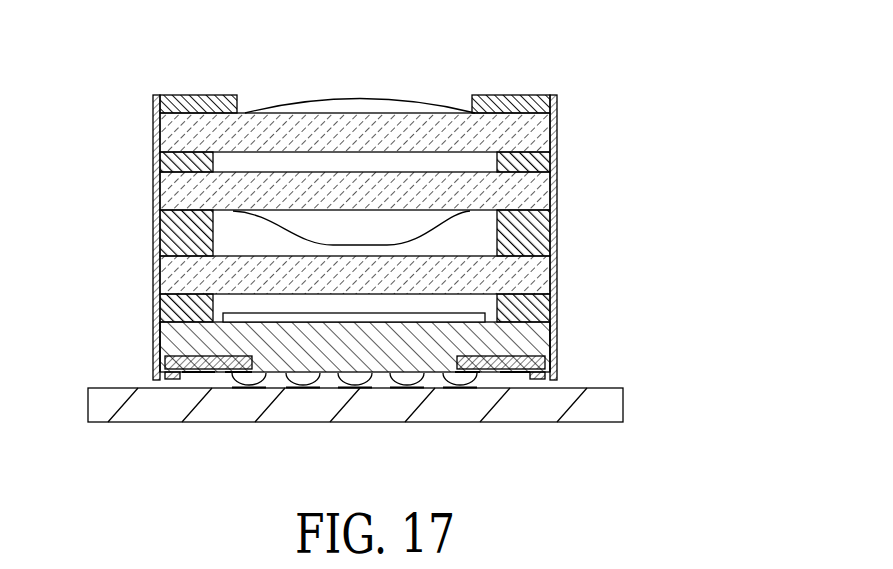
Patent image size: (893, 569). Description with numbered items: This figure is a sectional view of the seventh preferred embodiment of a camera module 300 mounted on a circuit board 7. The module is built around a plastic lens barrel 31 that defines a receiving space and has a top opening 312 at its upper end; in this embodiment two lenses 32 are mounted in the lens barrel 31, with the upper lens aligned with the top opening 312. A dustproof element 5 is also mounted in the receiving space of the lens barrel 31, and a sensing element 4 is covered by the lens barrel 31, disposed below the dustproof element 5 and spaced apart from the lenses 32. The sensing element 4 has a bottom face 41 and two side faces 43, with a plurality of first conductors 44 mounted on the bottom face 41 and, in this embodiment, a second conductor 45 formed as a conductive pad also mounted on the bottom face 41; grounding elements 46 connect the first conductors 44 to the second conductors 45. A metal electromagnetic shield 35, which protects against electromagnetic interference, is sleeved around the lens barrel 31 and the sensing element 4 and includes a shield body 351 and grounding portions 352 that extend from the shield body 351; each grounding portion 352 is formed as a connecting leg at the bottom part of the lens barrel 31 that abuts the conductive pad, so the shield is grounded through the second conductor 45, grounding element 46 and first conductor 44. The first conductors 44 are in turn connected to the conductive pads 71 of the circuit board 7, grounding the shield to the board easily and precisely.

The camera module 300 is at (358, 237).
The top opening 312 is at (236, 107).
The lens 32 is at (362, 98).
The shield body 351 is at (558, 218).
The lens barrel 31 is at (557, 232).
The electromagnetic shield 35 is at (384, 253).
The grounding portion 352 is at (168, 377).
The side face 43 is at (153, 330).
The second conductor 45 is at (165, 372).
The grounding element 46 is at (198, 372).
The first conductor 44 is at (238, 374).
The conductive pad 71 is at (254, 389).
The bottom face 41 is at (310, 372).
The dustproof element 5 is at (337, 268).
The sensing element 4 is at (356, 391).
The circuit board 7 is at (340, 429).